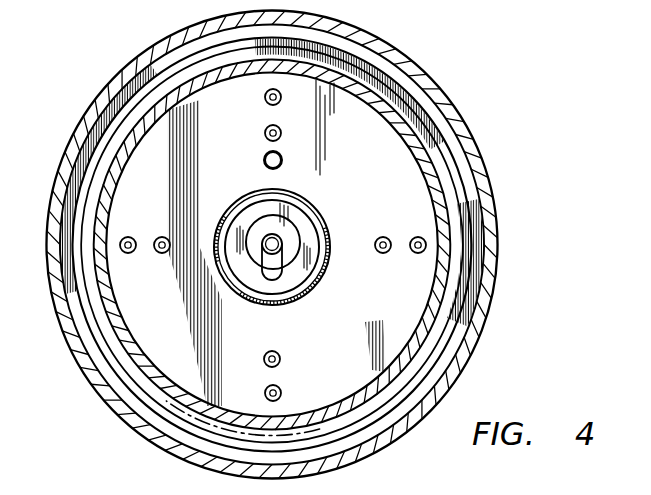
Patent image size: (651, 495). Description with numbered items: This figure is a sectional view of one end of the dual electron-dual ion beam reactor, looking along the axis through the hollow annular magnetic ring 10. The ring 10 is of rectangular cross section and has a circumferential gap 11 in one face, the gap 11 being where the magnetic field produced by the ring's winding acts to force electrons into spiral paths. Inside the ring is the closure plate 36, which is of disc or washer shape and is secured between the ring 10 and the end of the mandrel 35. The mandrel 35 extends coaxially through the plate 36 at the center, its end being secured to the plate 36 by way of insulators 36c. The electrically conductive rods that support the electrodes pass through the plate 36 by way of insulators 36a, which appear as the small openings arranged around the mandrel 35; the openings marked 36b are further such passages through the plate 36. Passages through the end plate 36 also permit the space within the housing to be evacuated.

The hollow annular magnetic ring 10 is at (84, 130).
The circumferential gap 11 is at (334, 72).
The mandrel 35 is at (276, 288).
The closure plate 36 is at (344, 348).
The insulators 36a is at (266, 99).
The inner mounting holes 36b is at (266, 135).
The insulators 36c is at (311, 204).